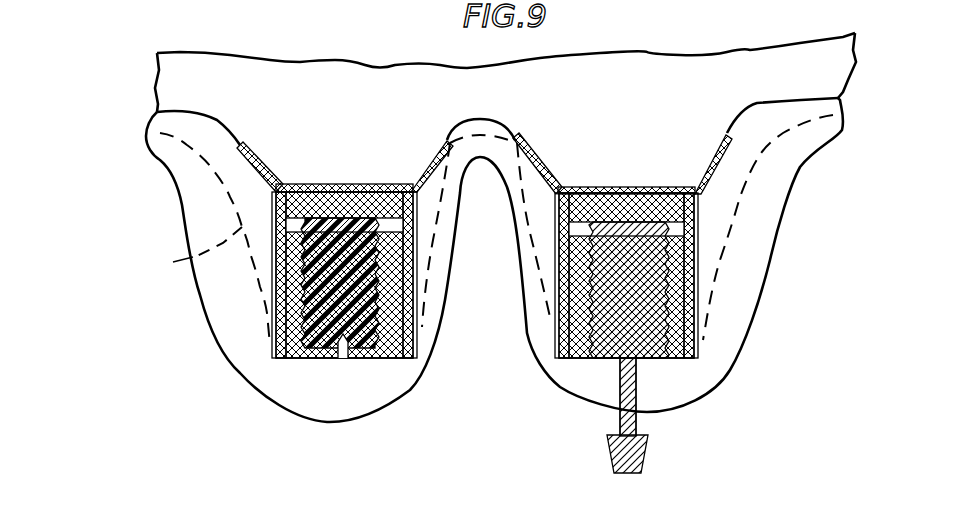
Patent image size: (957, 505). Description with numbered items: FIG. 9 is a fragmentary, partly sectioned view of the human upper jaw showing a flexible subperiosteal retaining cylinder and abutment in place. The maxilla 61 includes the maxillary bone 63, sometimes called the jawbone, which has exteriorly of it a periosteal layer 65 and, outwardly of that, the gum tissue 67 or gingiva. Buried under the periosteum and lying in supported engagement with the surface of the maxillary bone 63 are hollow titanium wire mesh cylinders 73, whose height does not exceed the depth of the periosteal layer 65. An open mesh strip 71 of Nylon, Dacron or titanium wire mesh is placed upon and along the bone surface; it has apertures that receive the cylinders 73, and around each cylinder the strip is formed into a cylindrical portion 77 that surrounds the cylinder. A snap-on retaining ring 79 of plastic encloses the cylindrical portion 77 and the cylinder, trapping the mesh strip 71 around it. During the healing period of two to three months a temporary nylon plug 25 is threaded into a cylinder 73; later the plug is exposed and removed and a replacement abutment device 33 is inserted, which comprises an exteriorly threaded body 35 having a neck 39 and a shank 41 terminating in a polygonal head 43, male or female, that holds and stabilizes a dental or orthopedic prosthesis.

The temporary nylon plug 25 is at (408, 342).
The implant assembly 33 is at (640, 323).
The body 35 is at (645, 238).
The neck 39 is at (647, 365).
The shank 41 is at (618, 428).
The polygonal head 43 is at (614, 467).
The maxilla 61 is at (153, 110).
The maxillary bone 63 is at (358, 70).
The periosteal layer 65 is at (420, 287).
The gum tissue 67 is at (370, 404).
The open mesh strip 71 is at (255, 168).
The wire mesh cylinder 73 is at (673, 322).
The cylindrical portion 77 is at (273, 299).
The snap ring 79 is at (272, 338).